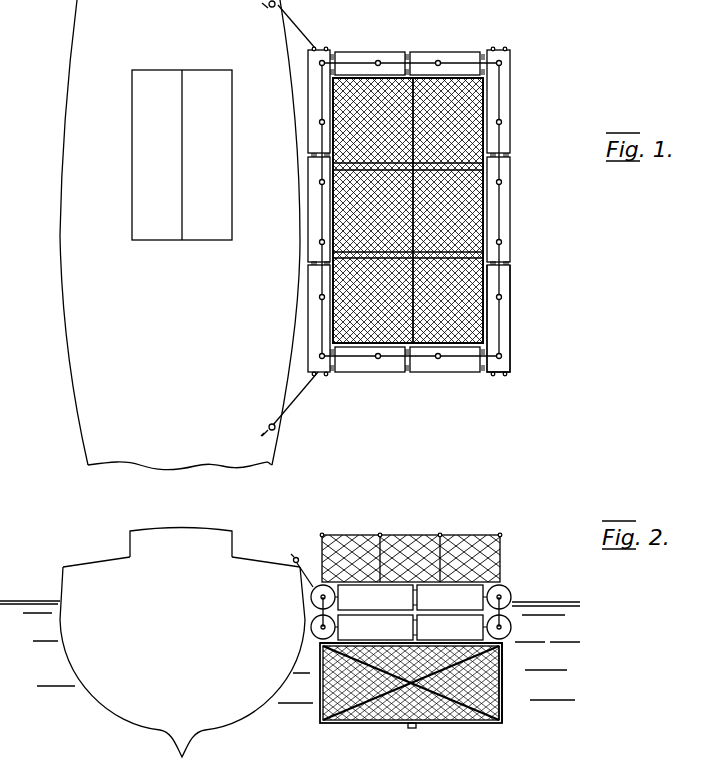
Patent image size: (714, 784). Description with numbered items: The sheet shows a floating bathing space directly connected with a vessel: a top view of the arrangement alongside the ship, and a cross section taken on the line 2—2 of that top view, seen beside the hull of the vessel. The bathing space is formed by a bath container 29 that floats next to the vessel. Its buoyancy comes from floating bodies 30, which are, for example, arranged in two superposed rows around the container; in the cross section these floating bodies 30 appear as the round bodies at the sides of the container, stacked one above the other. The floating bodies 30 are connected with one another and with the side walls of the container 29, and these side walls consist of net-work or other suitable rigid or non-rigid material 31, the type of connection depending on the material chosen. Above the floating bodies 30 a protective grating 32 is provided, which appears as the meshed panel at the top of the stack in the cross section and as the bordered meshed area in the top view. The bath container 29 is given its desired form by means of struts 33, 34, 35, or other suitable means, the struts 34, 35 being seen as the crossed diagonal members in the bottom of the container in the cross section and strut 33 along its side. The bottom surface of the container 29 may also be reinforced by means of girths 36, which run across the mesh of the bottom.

In FIG. 1, the section line 2— 2 is at (322, 211).
In FIG. 1, the bath container 29 is at (349, 80).
In FIG. 2, the bath container 29 is at (333, 703).
In FIG. 1, the floating bodies 30 is at (395, 55).
In FIG. 2, the floating bodies 30 is at (504, 596).
In FIG. 1, the net-work or other suitable rigid or non-rigid material 31 is at (460, 335).
In FIG. 2, the net-work or other suitable rigid or non-rigid material 31 is at (500, 664).
In FIG. 1, the protective grating 32 is at (500, 320).
In FIG. 2, the protective grating 32 is at (320, 540).
In FIG. 2, the strut 33 is at (497, 693).
In FIG. 2, the strut 34 is at (476, 718).
In FIG. 2, the strut 35 is at (348, 715).
In FIG. 1, the girths 36 is at (482, 252).
In FIG. 2, the girths 36 is at (404, 734).